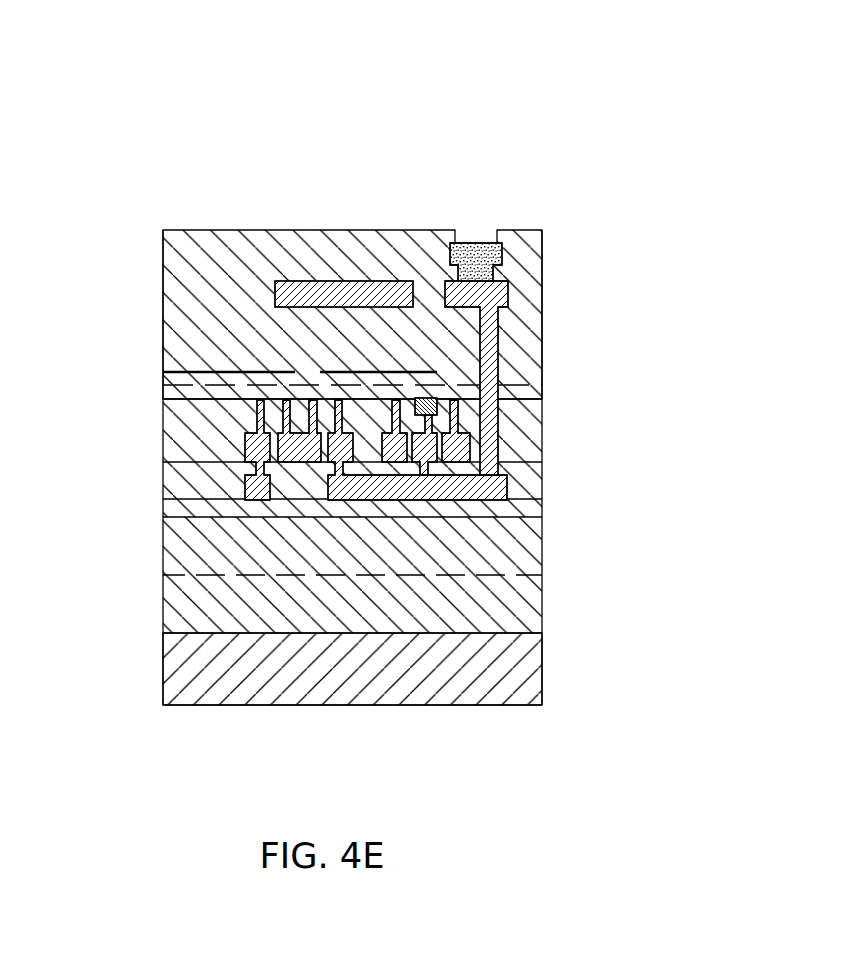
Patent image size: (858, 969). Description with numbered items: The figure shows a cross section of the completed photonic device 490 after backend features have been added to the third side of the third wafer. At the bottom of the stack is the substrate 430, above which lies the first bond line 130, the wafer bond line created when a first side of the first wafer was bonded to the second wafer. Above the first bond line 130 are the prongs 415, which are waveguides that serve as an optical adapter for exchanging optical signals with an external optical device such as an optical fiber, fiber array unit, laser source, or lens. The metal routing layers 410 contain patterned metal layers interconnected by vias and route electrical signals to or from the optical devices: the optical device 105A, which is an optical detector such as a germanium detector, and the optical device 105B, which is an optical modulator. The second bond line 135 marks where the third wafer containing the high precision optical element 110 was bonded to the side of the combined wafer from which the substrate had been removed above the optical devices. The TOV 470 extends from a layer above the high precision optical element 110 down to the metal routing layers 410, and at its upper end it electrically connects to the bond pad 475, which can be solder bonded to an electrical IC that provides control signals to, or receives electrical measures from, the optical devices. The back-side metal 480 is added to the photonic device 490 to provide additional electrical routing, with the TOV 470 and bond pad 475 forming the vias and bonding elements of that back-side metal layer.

The high precision optical element 110 is at (283, 368).
The back-side metal 480 is at (367, 292).
The bond pad 475 is at (512, 204).
The optical device 105A is at (432, 393).
The optical device 105B is at (266, 397).
The TOV 470 is at (500, 363).
The second bond line 135 is at (535, 386).
The metal routing layers 410 is at (163, 498).
The prongs 415 is at (503, 516).
The first bond line 130 is at (503, 580).
The substrate 430 is at (380, 705).
The photonic device 490 is at (437, 399).